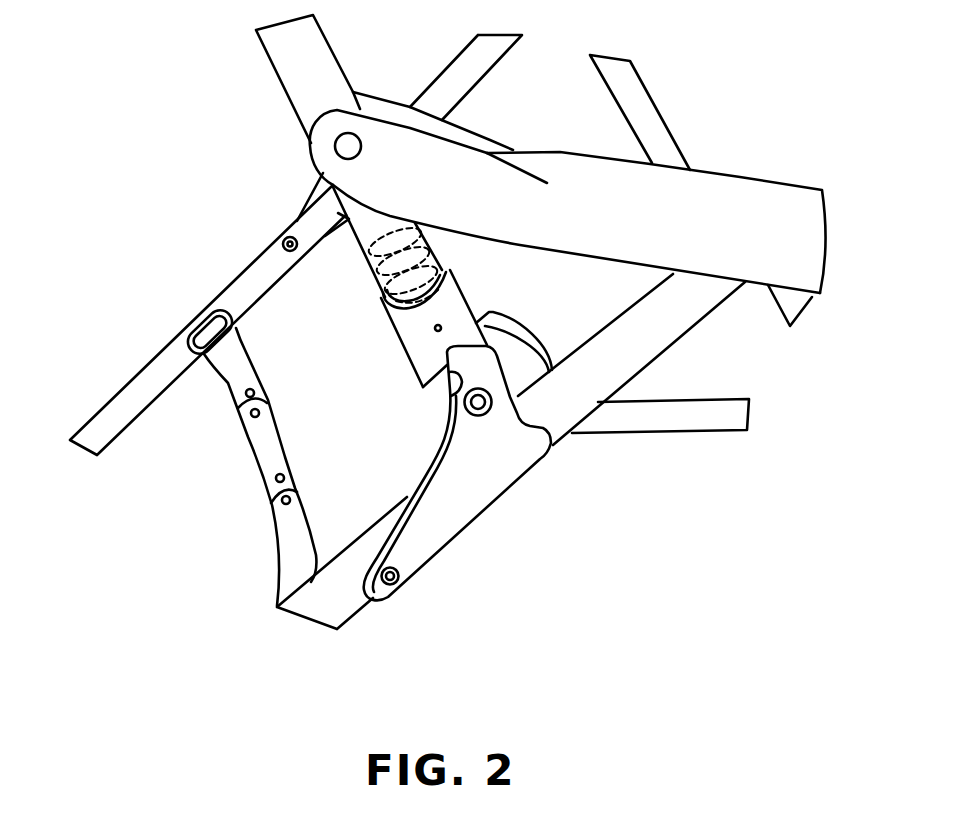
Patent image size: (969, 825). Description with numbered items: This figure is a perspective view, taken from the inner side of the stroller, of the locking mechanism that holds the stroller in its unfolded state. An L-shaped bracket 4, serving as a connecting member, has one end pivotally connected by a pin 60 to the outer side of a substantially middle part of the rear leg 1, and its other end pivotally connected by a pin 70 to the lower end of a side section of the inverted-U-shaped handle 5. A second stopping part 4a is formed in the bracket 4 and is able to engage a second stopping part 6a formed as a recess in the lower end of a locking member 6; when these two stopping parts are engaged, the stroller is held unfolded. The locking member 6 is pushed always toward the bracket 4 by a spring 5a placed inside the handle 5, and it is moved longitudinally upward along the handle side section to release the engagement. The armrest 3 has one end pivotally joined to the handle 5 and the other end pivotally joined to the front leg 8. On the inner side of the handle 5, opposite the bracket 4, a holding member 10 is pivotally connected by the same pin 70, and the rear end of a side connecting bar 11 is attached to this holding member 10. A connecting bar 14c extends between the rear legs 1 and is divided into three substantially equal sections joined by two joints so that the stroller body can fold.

The rear leg 1 is at (120, 400).
The armrest 3 is at (768, 185).
The L-shaped bracket 4 is at (312, 190).
The second stopping part 4a is at (447, 381).
The handle 5 is at (289, 90).
The spring 5a is at (370, 262).
The locking member 6 is at (403, 338).
The second stopping part 6a is at (424, 368).
The front leg 8 is at (652, 112).
The holding member 10 is at (532, 330).
The side connecting bar 11 is at (697, 420).
The connecting bar 14c is at (275, 527).
The pin 60 is at (398, 584).
The pin 70 is at (490, 413).